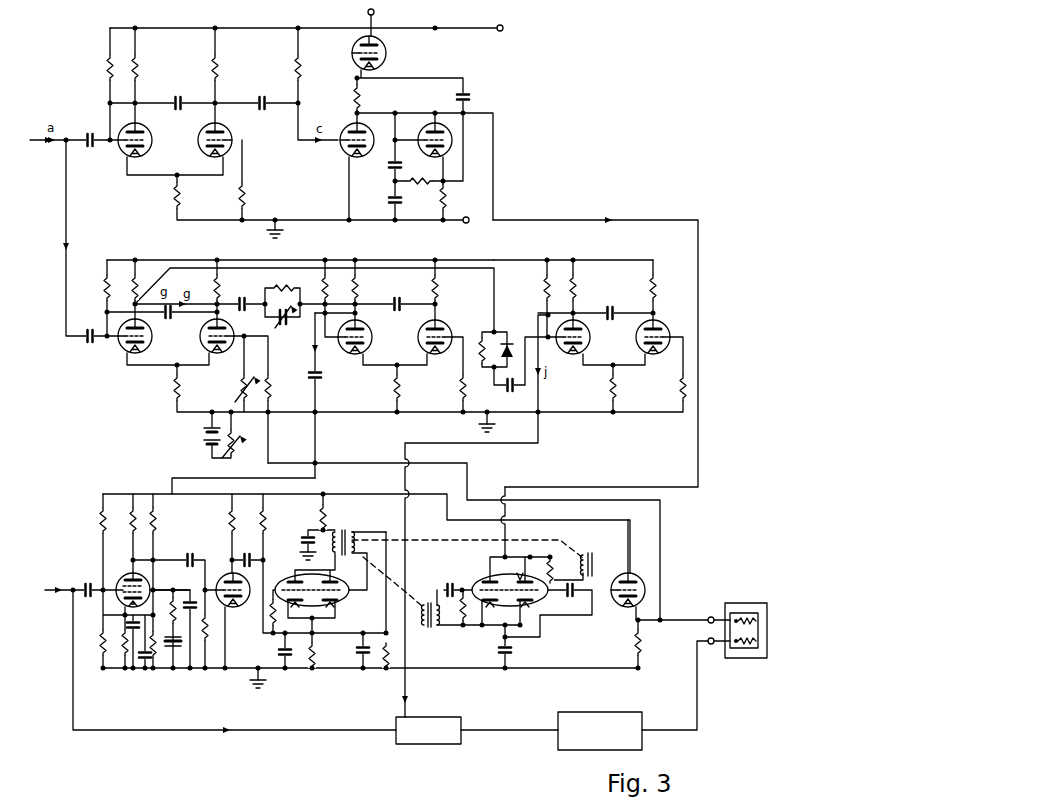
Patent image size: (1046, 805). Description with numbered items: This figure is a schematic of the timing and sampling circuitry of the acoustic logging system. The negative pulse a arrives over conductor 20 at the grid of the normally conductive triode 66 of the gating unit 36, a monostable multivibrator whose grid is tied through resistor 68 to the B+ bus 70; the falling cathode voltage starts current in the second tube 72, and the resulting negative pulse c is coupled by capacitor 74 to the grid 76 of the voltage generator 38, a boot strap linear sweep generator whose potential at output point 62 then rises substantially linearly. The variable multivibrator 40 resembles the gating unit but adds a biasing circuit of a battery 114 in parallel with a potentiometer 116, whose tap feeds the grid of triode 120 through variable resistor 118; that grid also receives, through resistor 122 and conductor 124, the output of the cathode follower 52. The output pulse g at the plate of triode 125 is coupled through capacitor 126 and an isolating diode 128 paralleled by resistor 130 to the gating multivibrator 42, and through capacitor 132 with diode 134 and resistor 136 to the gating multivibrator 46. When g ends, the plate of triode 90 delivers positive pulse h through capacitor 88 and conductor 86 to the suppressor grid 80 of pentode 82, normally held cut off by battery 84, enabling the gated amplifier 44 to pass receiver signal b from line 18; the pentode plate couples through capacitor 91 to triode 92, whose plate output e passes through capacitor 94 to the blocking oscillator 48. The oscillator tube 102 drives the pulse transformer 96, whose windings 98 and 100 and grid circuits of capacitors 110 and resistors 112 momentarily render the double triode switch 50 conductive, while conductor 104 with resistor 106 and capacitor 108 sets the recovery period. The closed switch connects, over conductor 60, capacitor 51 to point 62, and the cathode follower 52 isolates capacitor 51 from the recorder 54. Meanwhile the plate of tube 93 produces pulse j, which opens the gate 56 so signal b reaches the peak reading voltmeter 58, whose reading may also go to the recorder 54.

The line 18 is at (64, 595).
The conductor 20 is at (55, 142).
The gating unit 36 is at (272, 17).
The voltage generator 38 is at (437, 38).
The variable multivibrator 40 is at (216, 250).
The gating multivibrator 42 is at (409, 249).
The gated amplifier 44 is at (143, 494).
The gating multivibrator 46 is at (573, 249).
The blocking oscillator 48 is at (476, 525).
The switch 50 is at (488, 571).
The capacitor 51 is at (512, 650).
The cathode follower 52 is at (645, 583).
The recorder 54 is at (745, 603).
The gate 56 is at (428, 744).
The peak reading voltmeter 58 is at (592, 712).
The conductor 60 is at (700, 400).
The output point 62 is at (362, 112).
The triode 66 is at (152, 132).
The resistor 68 is at (107, 72).
The B+ bus 70 is at (275, 26).
The second tube 72 is at (233, 133).
The capacitor 74 is at (265, 100).
The grid 76 is at (343, 148).
The suppressor grid 80 is at (143, 583).
The pentode 82 is at (122, 574).
The battery 84 is at (184, 645).
The conductor 86 is at (316, 435).
The capacitor 88 is at (318, 384).
The triode 90 is at (372, 330).
The capacitor 91 is at (191, 554).
The triode 92 is at (540, 440).
The tube 93 is at (590, 337).
The capacitor 94 is at (258, 556).
The pulse transformer 96 is at (350, 530).
The winding 98 is at (437, 628).
The winding 100 is at (604, 549).
The oscillator tube 102 is at (345, 600).
The conductor 104 is at (386, 626).
The resistor 106 is at (388, 651).
The capacitor 108 is at (362, 653).
The capacitors 110 is at (444, 585).
The resistors 112 is at (467, 616).
The battery 114 is at (208, 434).
The potentiometer 116 is at (240, 453).
The variable resistor 118 is at (234, 394).
The triode 120 is at (234, 329).
The resistor 122 is at (269, 380).
The conductor 124 is at (347, 462).
The triode 125 is at (153, 332).
The capacitor 126 is at (240, 300).
The diode 128 is at (287, 325).
The resistor 130 is at (285, 286).
The capacitor 132 is at (504, 390).
The diode 134 is at (509, 342).
The resistor 136 is at (476, 338).